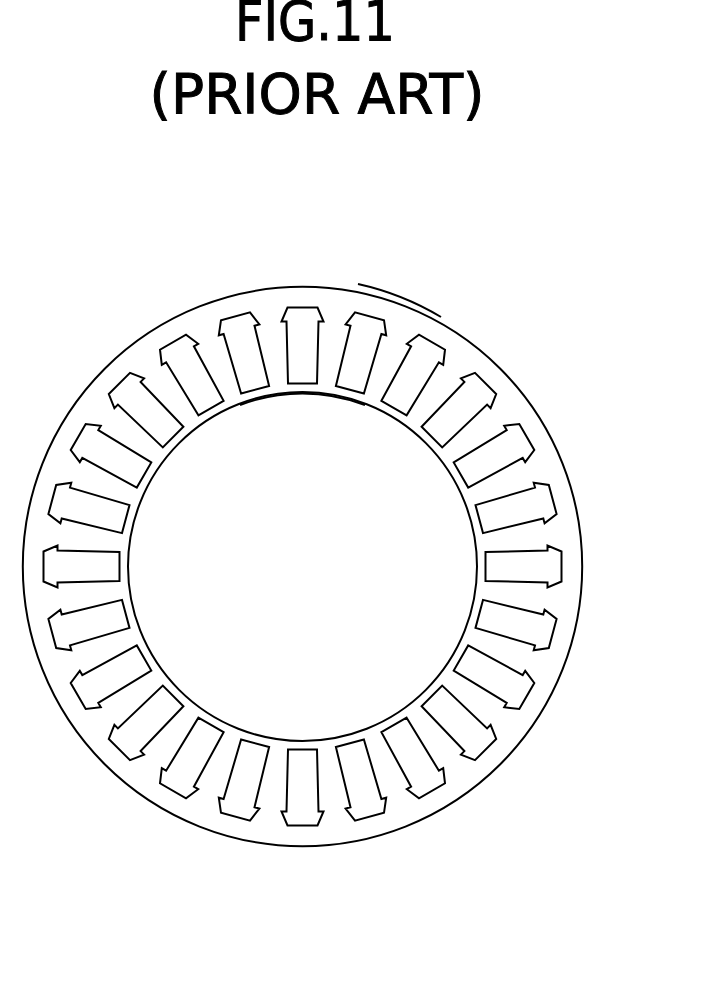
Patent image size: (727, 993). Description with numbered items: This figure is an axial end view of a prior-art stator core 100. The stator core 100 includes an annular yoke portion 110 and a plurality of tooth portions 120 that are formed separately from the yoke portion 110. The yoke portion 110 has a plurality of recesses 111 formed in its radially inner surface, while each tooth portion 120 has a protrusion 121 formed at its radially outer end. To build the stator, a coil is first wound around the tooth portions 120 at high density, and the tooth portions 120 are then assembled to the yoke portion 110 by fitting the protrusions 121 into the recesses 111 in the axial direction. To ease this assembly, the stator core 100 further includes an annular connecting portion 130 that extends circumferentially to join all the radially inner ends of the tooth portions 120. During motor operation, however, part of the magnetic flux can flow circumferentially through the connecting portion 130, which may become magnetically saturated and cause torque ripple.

The stator core 100 is at (478, 340).
The yoke portion 110 is at (376, 312).
The recess 111 is at (343, 314).
The tooth portion 120 is at (272, 350).
The protrusion 121 is at (327, 318).
The connecting portion 130 is at (305, 383).